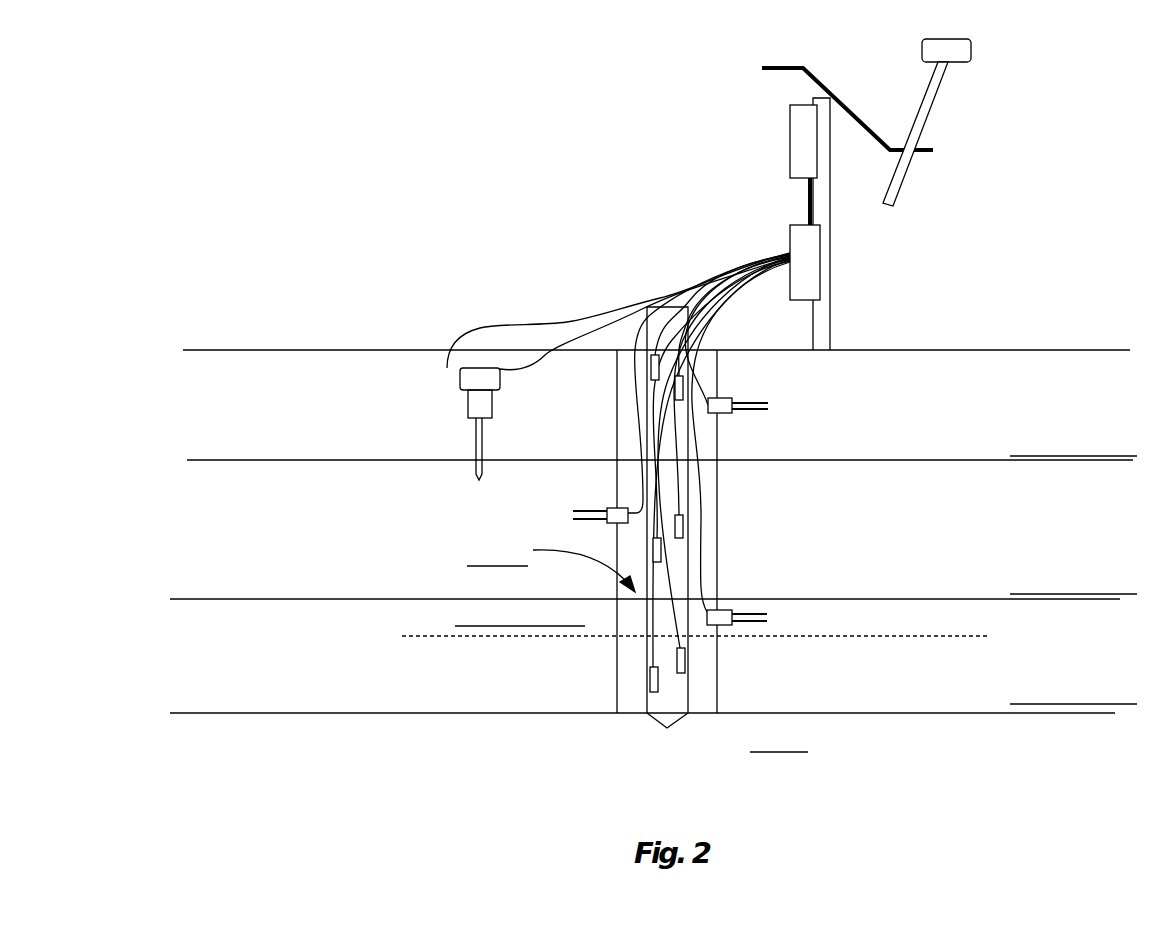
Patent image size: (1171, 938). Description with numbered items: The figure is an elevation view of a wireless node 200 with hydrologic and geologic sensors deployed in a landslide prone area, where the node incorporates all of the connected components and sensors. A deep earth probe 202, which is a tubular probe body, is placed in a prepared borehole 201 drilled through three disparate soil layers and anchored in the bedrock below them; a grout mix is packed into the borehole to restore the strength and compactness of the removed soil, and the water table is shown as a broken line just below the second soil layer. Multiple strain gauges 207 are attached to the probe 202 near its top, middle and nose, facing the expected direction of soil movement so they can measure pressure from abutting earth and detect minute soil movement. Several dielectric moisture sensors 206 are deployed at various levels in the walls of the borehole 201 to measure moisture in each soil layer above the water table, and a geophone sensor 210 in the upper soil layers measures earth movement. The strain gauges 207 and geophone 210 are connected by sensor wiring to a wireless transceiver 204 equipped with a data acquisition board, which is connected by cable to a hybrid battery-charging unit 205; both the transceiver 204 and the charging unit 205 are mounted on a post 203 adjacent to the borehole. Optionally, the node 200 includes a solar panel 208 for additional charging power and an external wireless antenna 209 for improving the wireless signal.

The wireless node 200 is at (550, 246).
The borehole 201 is at (617, 446).
The deep earth probe 202 is at (688, 700).
The post 203 is at (833, 245).
The wireless transceiver 204 is at (790, 240).
The hybrid battery-charging unit 205 is at (790, 148).
The dielectric moisture sensor 206 is at (721, 398).
The strain gauge 207 is at (660, 558).
The solar panel 208 is at (780, 66).
The external wireless antenna 209 is at (922, 133).
The geophone sensor 210 is at (472, 435).